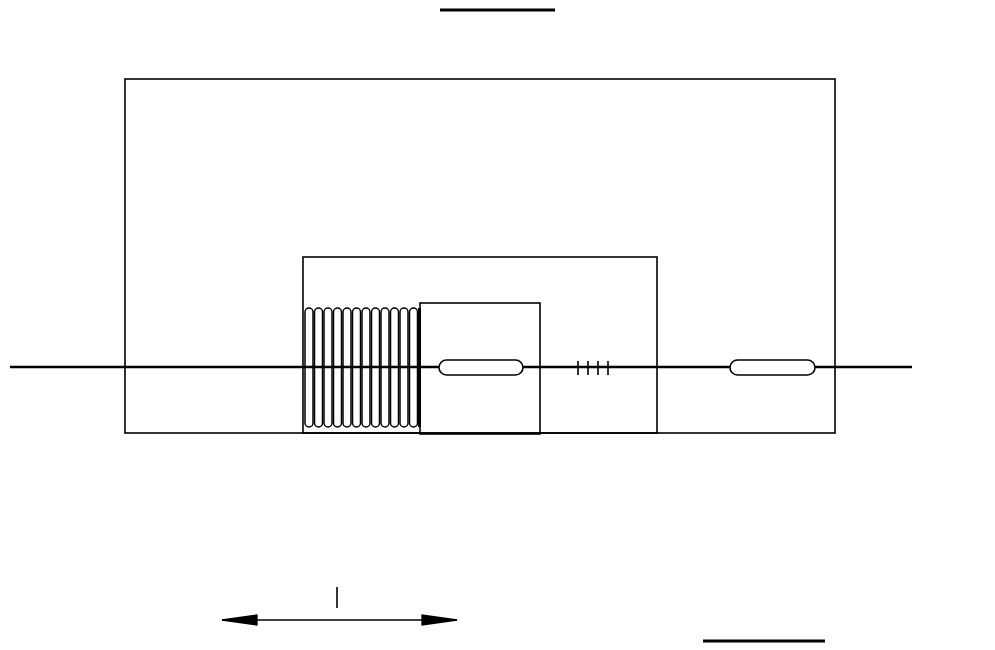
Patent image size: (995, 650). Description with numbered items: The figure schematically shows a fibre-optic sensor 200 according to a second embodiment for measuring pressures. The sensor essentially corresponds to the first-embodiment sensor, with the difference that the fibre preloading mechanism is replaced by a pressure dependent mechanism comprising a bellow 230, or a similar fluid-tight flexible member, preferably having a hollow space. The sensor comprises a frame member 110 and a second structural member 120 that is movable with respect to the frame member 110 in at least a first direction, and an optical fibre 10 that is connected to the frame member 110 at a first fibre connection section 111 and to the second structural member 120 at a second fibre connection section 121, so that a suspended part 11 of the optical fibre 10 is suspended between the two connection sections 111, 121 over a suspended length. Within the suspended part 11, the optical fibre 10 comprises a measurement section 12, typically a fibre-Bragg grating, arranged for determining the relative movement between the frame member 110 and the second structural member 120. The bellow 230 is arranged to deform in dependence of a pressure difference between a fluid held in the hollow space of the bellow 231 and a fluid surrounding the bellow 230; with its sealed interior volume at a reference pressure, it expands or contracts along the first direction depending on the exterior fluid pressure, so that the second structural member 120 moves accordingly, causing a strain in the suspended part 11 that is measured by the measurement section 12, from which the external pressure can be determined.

The fibre-optic sensor 200 is at (69, 87).
The frame member 110 is at (815, 88).
The optical fibre 10 is at (876, 368).
The suspended part 11 is at (648, 370).
The measurement section 12 is at (593, 378).
The second structural member 120 is at (500, 415).
The second fibre connection section 121 is at (482, 372).
The first fibre connection section 111 is at (780, 372).
The bellow 230 is at (334, 424).
The hollow space of the bellow 231 is at (345, 345).